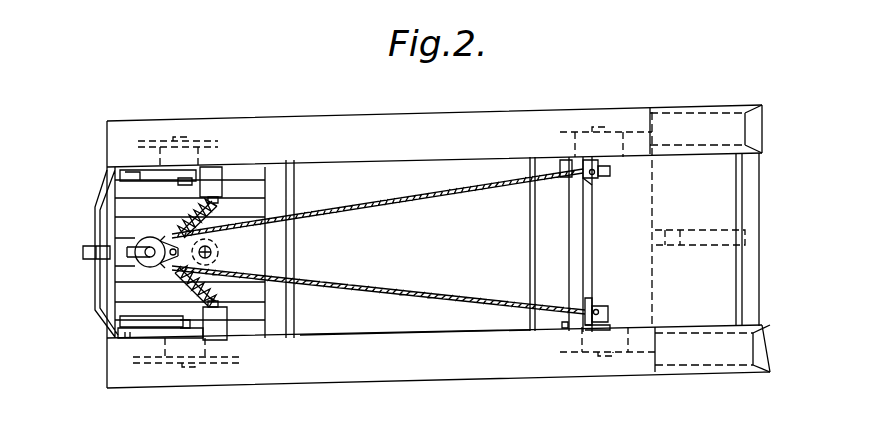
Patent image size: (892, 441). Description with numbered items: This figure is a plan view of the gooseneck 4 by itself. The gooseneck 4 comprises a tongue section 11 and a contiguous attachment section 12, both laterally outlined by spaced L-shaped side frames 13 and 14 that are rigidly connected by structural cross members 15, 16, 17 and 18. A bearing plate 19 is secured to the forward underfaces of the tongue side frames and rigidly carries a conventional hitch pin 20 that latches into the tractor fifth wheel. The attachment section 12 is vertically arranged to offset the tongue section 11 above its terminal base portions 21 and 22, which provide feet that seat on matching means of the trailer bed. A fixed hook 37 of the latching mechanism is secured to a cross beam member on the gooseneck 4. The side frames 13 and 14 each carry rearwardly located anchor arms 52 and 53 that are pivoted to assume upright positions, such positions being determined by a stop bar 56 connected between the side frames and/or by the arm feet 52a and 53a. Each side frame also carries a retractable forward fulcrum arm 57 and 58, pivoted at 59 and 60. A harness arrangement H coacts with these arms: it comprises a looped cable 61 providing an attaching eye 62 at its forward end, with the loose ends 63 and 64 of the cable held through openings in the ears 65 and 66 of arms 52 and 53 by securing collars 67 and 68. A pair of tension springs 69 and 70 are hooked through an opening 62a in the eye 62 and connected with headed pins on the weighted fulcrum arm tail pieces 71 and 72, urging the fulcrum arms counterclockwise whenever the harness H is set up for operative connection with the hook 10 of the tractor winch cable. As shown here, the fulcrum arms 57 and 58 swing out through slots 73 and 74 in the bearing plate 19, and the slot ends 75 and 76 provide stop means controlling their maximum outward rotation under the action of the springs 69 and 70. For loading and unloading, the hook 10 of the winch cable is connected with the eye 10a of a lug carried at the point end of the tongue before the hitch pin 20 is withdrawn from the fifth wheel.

The gooseneck 4 is at (308, 110).
The hook 10 is at (138, 246).
The eye 10a is at (83, 254).
The tongue section 11 is at (358, 383).
The attachment section 12 is at (765, 372).
The side frame 13 is at (447, 378).
The side frame 14 is at (470, 113).
The cross member 15 is at (107, 185).
The cross member 16 is at (530, 218).
The cross member 17 is at (630, 250).
The cross member 18 is at (760, 183).
The bearing plate 19 is at (292, 243).
The hitch pin 20 is at (219, 252).
The base portion 21 is at (699, 370).
The base portion 22 is at (693, 122).
The fixed hook 37 is at (693, 232).
The anchor arm 52 is at (620, 318).
The arm foot 52a is at (563, 330).
The anchor arm 53 is at (612, 162).
The arm foot 53a is at (553, 160).
The stop bar 56 is at (569, 243).
The fulcrum arm 57 is at (140, 346).
The fulcrum arm 58 is at (135, 168).
The pivot 59 is at (180, 319).
The pivot 60 is at (180, 183).
The looped cable 61 is at (322, 287).
The attaching eye 62 is at (145, 258).
The opening 62a is at (143, 243).
The loose end 63 is at (520, 312).
The loose end 64 is at (566, 168).
The ear 65 is at (590, 300).
The ear 66 is at (587, 184).
The securing collar 67 is at (598, 332).
The securing collar 68 is at (592, 160).
The tension spring 69 is at (217, 297).
The tension spring 70 is at (217, 210).
The fulcrum arm tail piece 71 is at (222, 330).
The fulcrum arm tail piece 72 is at (215, 178).
The slot 73 is at (115, 338).
The slot 74 is at (143, 178).
The slot end 75 is at (208, 366).
The slot end 76 is at (212, 168).
The harness arrangement H is at (323, 207).